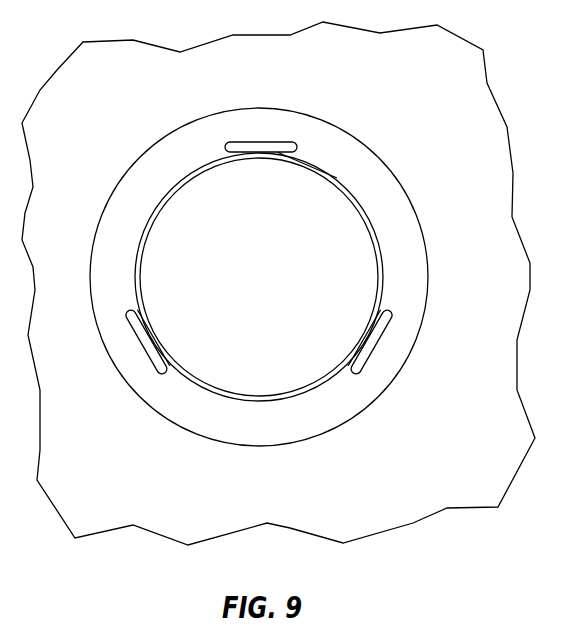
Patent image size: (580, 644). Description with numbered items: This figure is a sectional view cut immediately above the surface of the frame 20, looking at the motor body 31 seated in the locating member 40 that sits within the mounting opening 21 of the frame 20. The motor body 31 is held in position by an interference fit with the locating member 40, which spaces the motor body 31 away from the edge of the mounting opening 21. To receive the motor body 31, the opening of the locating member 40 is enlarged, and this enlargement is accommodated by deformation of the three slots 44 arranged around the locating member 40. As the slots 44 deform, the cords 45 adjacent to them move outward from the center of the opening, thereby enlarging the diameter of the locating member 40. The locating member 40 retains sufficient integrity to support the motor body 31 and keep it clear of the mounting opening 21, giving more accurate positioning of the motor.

The frame 20 is at (123, 500).
The mounting opening 21 is at (327, 388).
The motor body 31 is at (272, 288).
The locating member 40 is at (400, 333).
The slots 44 is at (278, 143).
The cords 45 is at (312, 164).